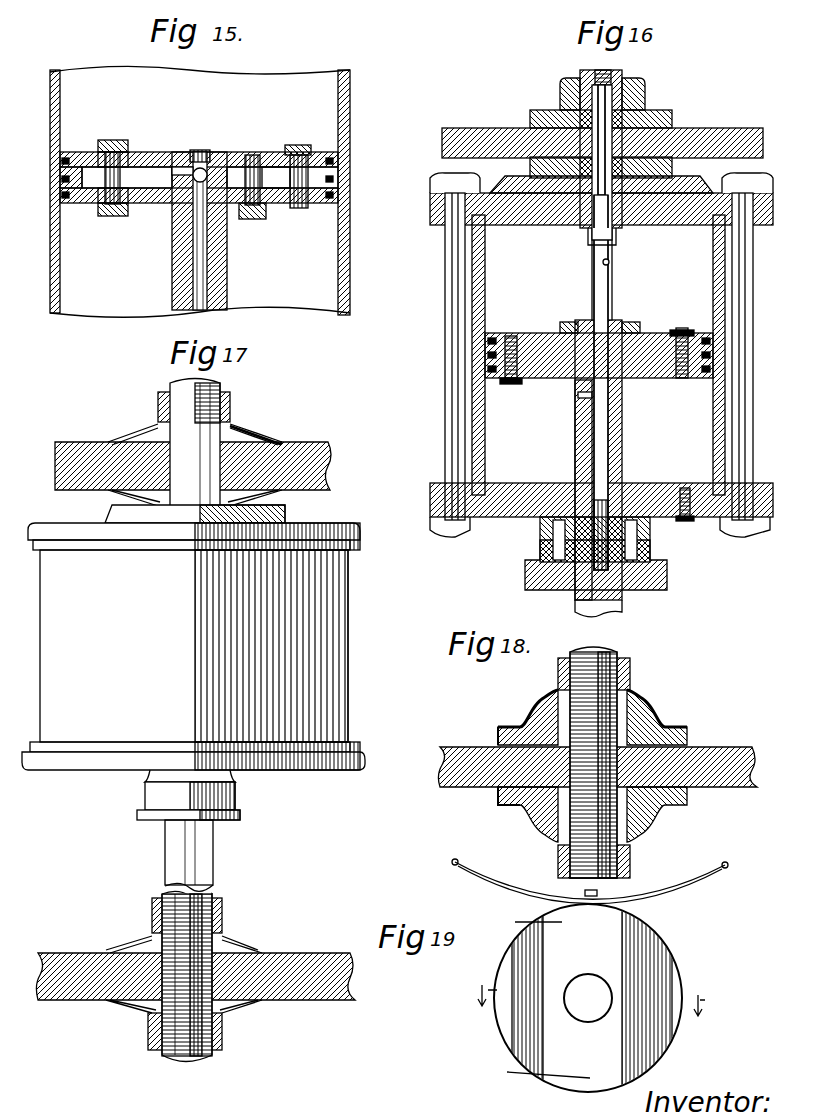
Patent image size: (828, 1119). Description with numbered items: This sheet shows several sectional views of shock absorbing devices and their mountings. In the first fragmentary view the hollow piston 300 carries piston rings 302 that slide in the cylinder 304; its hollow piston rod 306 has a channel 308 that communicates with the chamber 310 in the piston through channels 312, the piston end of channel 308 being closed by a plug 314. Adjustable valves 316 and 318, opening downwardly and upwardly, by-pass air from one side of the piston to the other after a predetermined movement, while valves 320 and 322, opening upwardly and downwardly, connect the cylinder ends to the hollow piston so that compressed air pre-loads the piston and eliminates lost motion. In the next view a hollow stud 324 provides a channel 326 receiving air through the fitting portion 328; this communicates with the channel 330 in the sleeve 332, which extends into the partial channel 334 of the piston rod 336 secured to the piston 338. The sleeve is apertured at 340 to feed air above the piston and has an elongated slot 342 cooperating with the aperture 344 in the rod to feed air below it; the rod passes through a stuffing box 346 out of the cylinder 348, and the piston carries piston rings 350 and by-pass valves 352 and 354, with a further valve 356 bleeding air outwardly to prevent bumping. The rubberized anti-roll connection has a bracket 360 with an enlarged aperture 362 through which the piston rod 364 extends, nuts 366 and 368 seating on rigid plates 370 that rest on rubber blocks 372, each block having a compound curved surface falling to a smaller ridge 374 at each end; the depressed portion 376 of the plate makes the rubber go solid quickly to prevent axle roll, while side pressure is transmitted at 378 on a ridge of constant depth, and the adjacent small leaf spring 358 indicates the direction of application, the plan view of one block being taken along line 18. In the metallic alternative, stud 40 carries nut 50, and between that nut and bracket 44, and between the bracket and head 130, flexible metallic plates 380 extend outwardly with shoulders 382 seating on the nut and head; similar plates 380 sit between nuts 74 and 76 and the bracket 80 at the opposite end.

In FIG. 15, the piston 300 is at (163, 128).
In FIG. 15, the piston rings 302 is at (340, 183).
In FIG. 15, the cylinder 304 is at (352, 103).
In FIG. 15, the hollow piston rod 306 is at (229, 278).
In FIG. 15, the channel 308 is at (193, 262).
In FIG. 15, the chamber 310 is at (150, 190).
In FIG. 15, the channels 312 is at (195, 150).
In FIG. 15, the plug 314 is at (207, 165).
In FIG. 15, the adjustable valve 316 is at (256, 219).
In FIG. 15, the adjustable valve 318 is at (300, 208).
In FIG. 15, the valve 320 is at (108, 140).
In FIG. 15, the valve 322 is at (101, 214).
In FIG. 16, the stud 324 is at (560, 92).
In FIG. 16, the channel 326 is at (646, 100).
In FIG. 16, the fitting portion 328 is at (626, 80).
In FIG. 16, the channel 330 is at (612, 258).
In FIG. 16, the sleeve 332 is at (612, 296).
In FIG. 16, the partial channel 334 is at (602, 512).
In FIG. 16, the piston rod 336 is at (625, 413).
In FIG. 16, the piston 338 is at (548, 333).
In FIG. 16, the aperture 340 is at (590, 240).
In FIG. 16, the elongated aperture or slot 342 is at (586, 425).
In FIG. 16, the aperture 344 is at (578, 396).
In FIG. 16, the stuffing box 346 is at (662, 560).
In FIG. 16, the cylinder 348 is at (727, 423).
In FIG. 16, the piston rings 350 is at (712, 352).
In FIG. 16, the by-pass valve 352 is at (487, 352).
In FIG. 16, the by-pass valve 354 is at (676, 330).
In FIG. 16, the valve 356 is at (685, 520).
In FIG. 18, the leaf spring 358 is at (680, 891).
In FIG. 18, the bracket 360 is at (740, 749).
In FIG. 18, the enlarged aperture 362 is at (500, 789).
In FIG. 18, the piston rod 364 is at (618, 660).
In FIG. 18, the nut 366 is at (632, 680).
In FIG. 18, the nut 368 is at (632, 856).
In FIG. 18, the plates 370 is at (642, 695).
In FIG. 18, the rubber blocks 372 is at (542, 702).
In FIG. 19, the rubber blocks 372 is at (602, 937).
In FIG. 18, the ridge 374 is at (500, 740).
In FIG. 19, the ridge 374 is at (515, 966).
In FIG. 18, the depressed portion 376 is at (518, 725).
In FIG. 19, the ridge of constant depth 378 is at (528, 995).
In FIG. 17, the flexible metallic plates 380 is at (252, 438).
In FIG. 17, the shoulders 382 is at (150, 430).
In FIG. 17, the stud 40 is at (180, 386).
In FIG. 17, the bracket 44 is at (66, 452).
In FIG. 17, the nut 50 is at (232, 402).
In FIG. 17, the head 130 is at (290, 526).
In FIG. 17, the nut 74 is at (156, 915).
In FIG. 17, the nut 76 is at (150, 1033).
In FIG. 17, the bracket 80 is at (60, 990).
In FIG. 19, the section line 18 is at (591, 1000).